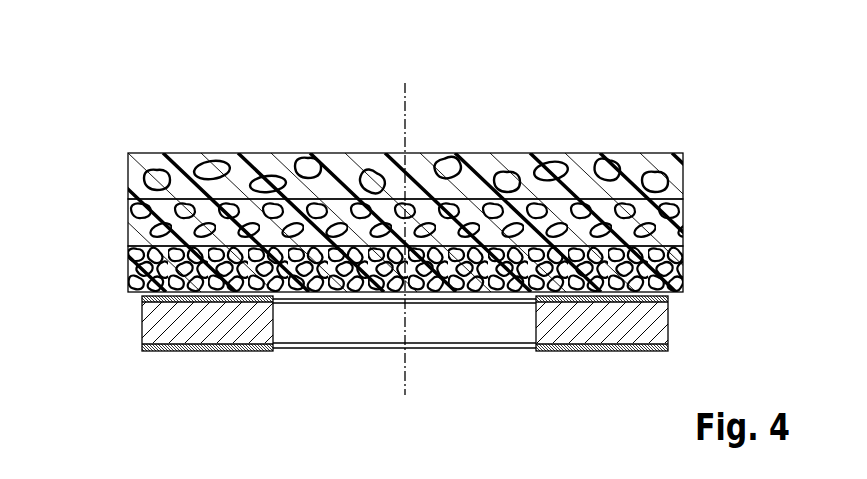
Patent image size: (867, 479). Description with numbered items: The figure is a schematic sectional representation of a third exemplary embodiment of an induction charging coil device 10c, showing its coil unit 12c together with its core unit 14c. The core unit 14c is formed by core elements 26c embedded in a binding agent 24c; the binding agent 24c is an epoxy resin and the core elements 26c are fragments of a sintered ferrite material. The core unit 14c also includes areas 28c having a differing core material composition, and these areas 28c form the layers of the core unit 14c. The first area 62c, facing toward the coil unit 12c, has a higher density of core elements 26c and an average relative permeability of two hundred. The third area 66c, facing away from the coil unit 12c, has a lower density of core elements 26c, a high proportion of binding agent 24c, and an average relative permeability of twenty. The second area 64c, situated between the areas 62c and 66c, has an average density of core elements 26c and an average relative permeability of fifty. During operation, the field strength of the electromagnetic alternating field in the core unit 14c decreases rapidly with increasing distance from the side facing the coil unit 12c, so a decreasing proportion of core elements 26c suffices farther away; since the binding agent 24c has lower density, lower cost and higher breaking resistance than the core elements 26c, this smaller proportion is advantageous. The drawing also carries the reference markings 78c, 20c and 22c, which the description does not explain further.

The induction charging coil device 10c is at (416, 222).
The coil unit 12c is at (202, 322).
The core unit 14c is at (416, 182).
The friction lining body 78c is at (416, 186).
The layered composite 20c is at (416, 182).
The center axis 22c is at (404, 103).
The binding agent 24c is at (480, 165).
The core elements 26c is at (270, 182).
The areas 28c is at (416, 186).
The first area 62c is at (126, 265).
The second area 64c is at (126, 220).
The third area 66c is at (126, 176).